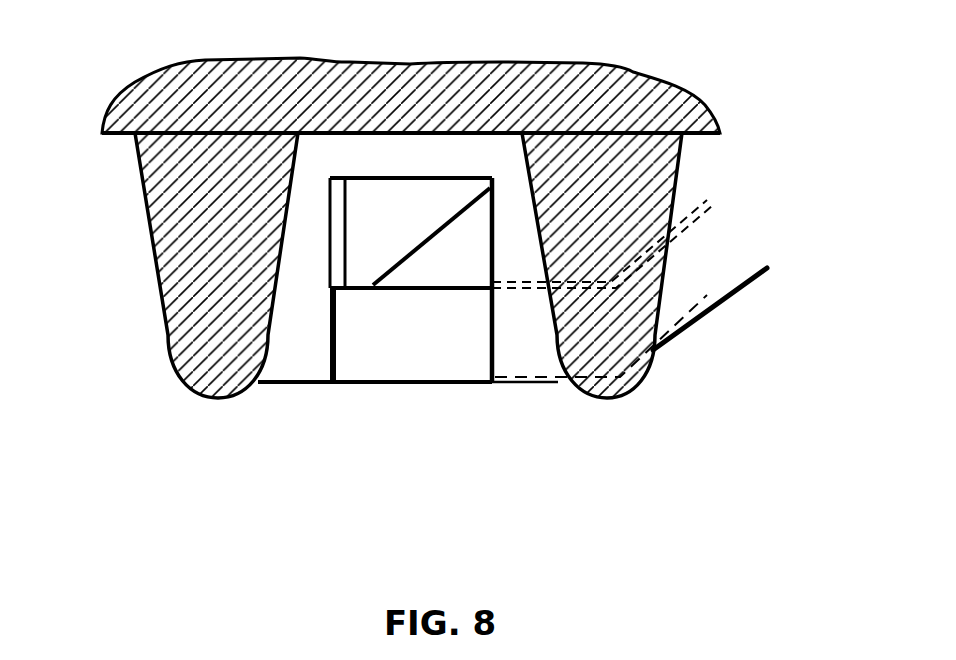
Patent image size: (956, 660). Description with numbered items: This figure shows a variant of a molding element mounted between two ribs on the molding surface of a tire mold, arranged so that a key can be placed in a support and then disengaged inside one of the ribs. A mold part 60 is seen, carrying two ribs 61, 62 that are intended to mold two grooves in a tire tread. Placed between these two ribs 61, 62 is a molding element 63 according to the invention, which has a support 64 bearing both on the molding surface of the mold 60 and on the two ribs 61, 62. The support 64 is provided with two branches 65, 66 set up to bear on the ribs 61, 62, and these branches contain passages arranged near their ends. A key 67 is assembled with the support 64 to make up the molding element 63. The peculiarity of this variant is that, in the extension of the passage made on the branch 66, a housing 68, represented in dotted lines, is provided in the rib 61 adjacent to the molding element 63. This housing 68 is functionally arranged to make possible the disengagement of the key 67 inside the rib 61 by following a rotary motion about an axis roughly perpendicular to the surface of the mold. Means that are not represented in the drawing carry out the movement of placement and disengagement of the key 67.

The mold part 60 is at (405, 119).
The rib 61 is at (613, 190).
The rib 62 is at (213, 300).
The molding element 63 is at (348, 385).
The support 64 is at (338, 155).
The branch 65 is at (305, 310).
The branch 66 is at (503, 248).
The key 67 is at (415, 330).
The housing 68 is at (605, 283).